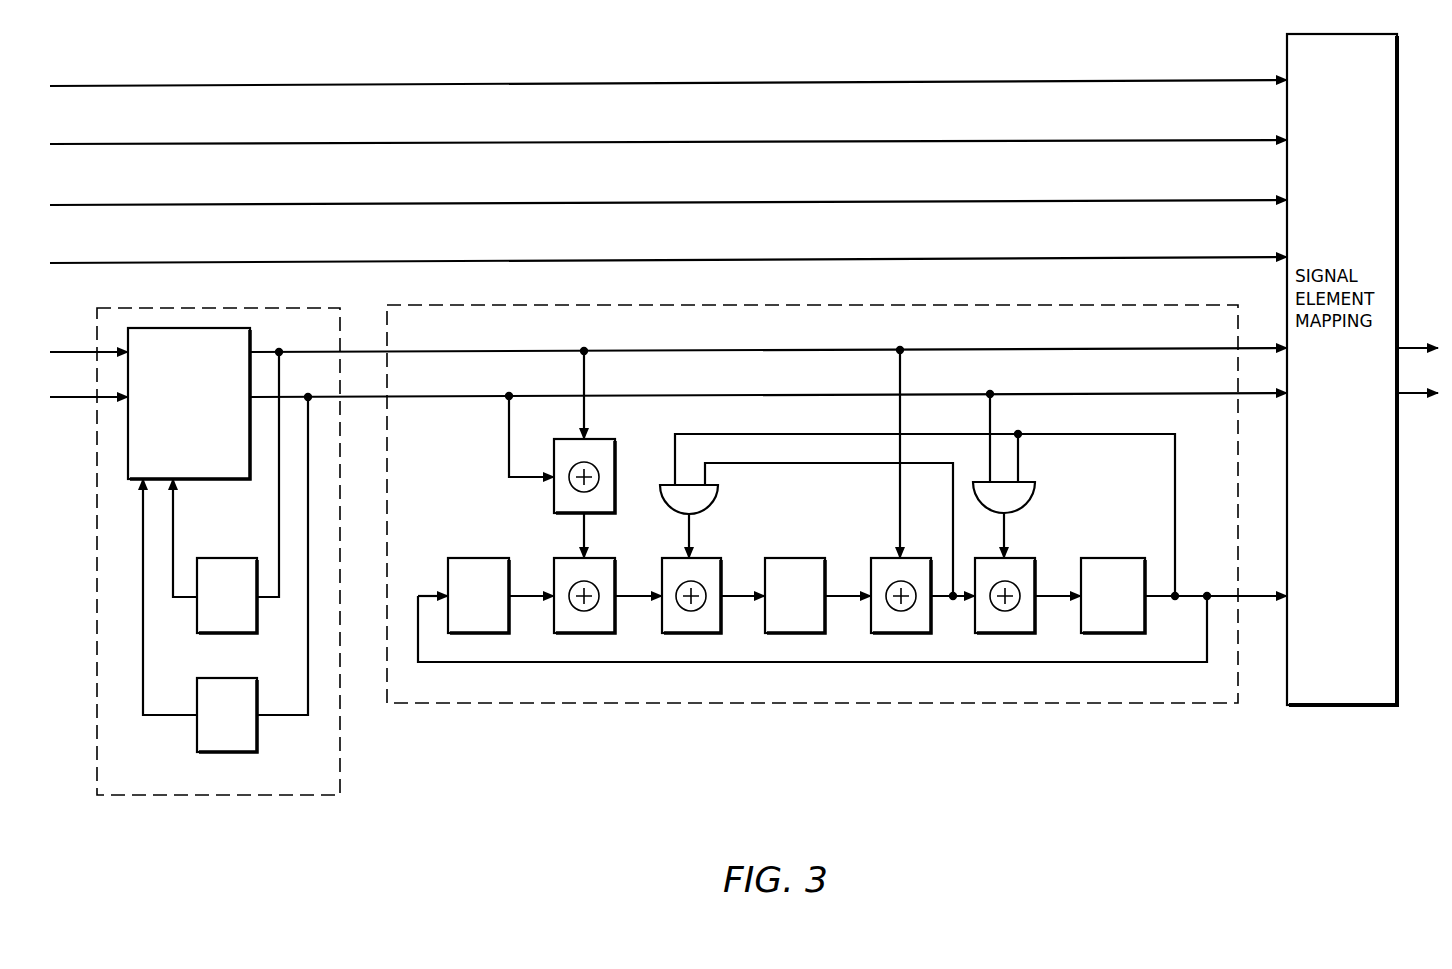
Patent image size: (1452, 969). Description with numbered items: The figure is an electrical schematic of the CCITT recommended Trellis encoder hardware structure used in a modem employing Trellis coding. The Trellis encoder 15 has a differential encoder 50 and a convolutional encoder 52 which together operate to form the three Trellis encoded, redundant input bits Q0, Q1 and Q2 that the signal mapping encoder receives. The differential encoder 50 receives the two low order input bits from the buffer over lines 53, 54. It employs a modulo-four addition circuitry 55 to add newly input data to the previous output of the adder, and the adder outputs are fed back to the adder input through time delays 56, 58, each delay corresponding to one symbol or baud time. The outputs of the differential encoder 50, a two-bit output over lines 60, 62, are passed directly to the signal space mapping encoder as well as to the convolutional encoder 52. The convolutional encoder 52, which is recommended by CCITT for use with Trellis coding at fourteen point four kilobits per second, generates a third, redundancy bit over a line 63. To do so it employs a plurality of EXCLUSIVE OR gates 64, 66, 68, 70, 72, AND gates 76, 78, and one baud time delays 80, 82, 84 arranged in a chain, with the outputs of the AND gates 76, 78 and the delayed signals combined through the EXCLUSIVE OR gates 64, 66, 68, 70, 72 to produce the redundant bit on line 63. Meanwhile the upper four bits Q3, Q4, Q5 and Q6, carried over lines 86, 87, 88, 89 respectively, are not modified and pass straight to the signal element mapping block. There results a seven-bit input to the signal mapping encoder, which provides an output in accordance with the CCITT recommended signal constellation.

The Trellis encoder 15 is at (432, 778).
The differential encoder 50 is at (320, 797).
The convolutional encoder 52 is at (572, 704).
The line 53 is at (82, 402).
The line 54 is at (50, 352).
The modulo-four addition circuitry 55 is at (200, 472).
The time delay 56 is at (257, 618).
The time delay 58 is at (257, 730).
The line 60 is at (489, 350).
The line 62 is at (483, 395).
The line 63 is at (1250, 600).
The EXCLUSIVE OR gate 64 is at (617, 446).
The EXCLUSIVE OR gate 66 is at (617, 568).
The EXCLUSIVE OR gate 68 is at (714, 557).
The EXCLUSIVE OR gate 70 is at (918, 557).
The EXCLUSIVE OR gate 72 is at (1028, 557).
The AND gate 76 is at (718, 500).
The AND gate 78 is at (1035, 492).
The one baud time delay 80 is at (509, 616).
The one baud time delay 82 is at (815, 633).
The one baud time delay 84 is at (1140, 608).
The line 86 is at (980, 258).
The line 87 is at (978, 200).
The line 88 is at (980, 140).
The line 89 is at (978, 80).